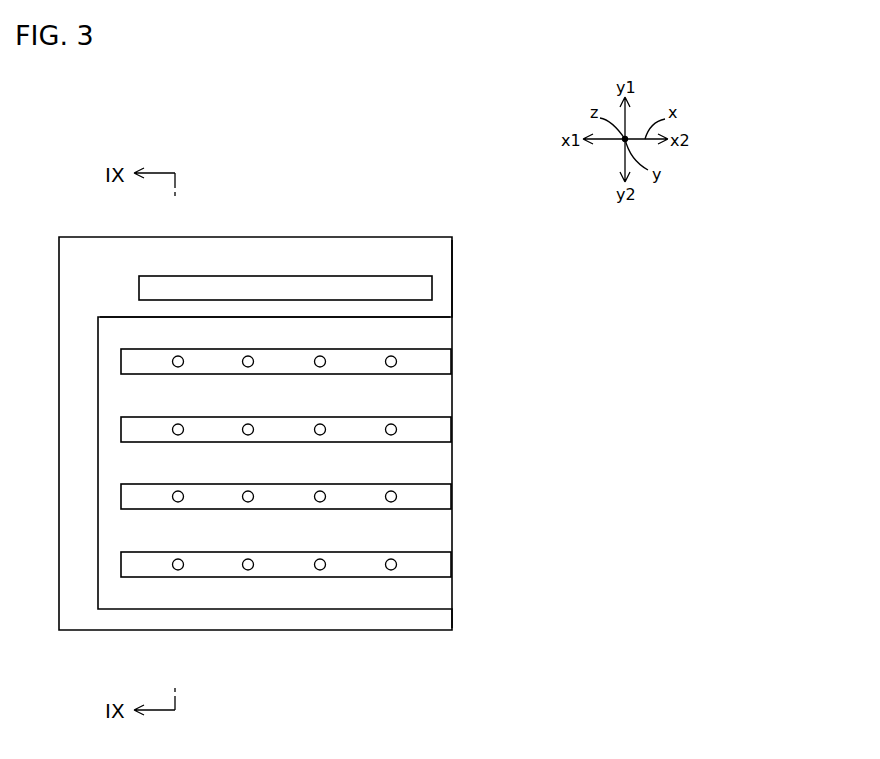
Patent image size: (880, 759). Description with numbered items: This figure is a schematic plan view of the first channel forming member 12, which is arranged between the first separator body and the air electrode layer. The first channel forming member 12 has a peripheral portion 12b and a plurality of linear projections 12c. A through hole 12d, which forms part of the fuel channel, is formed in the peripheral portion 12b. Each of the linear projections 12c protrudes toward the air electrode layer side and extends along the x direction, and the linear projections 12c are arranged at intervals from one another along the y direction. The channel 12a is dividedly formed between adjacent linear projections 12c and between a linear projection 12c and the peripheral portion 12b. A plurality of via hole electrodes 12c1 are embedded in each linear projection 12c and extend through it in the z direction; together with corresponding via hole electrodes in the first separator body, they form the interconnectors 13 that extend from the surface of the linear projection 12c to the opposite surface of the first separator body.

The first channel forming member 12 is at (471, 207).
The channel 12a is at (421, 317).
The peripheral portion 12b is at (464, 288).
The linear projections 12c is at (464, 436).
The via hole electrodes 12c1 is at (397, 496).
The through hole 12d is at (319, 278).
The interconnectors 13 is at (407, 570).